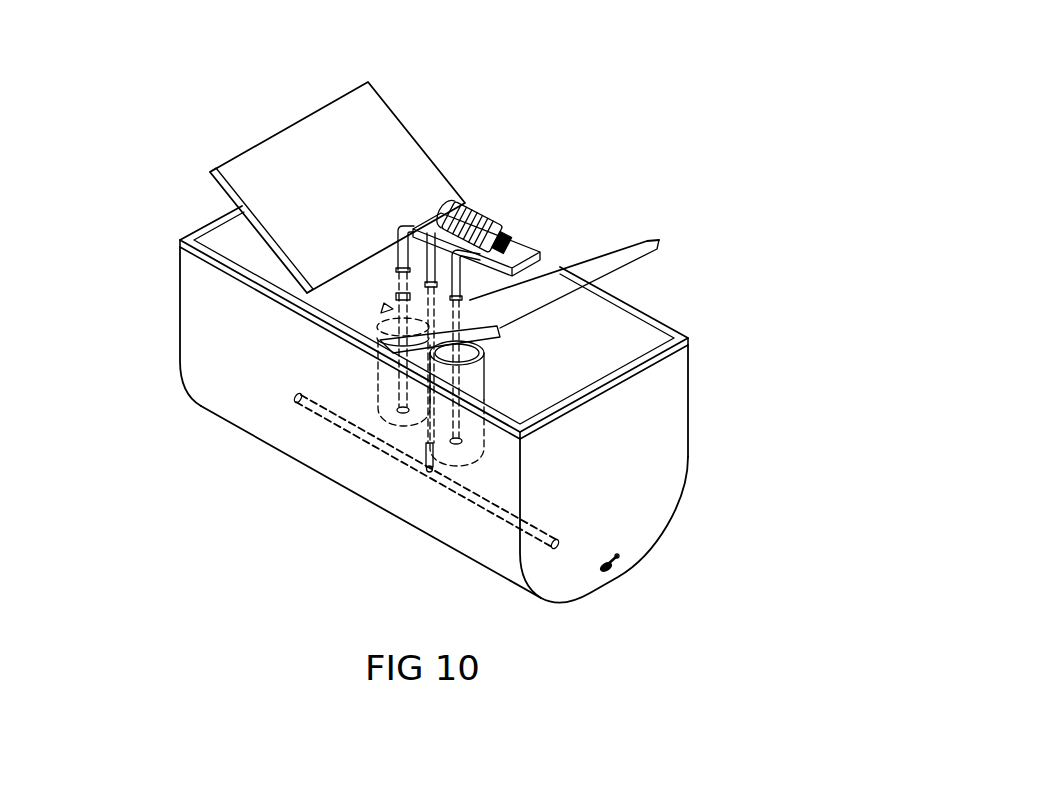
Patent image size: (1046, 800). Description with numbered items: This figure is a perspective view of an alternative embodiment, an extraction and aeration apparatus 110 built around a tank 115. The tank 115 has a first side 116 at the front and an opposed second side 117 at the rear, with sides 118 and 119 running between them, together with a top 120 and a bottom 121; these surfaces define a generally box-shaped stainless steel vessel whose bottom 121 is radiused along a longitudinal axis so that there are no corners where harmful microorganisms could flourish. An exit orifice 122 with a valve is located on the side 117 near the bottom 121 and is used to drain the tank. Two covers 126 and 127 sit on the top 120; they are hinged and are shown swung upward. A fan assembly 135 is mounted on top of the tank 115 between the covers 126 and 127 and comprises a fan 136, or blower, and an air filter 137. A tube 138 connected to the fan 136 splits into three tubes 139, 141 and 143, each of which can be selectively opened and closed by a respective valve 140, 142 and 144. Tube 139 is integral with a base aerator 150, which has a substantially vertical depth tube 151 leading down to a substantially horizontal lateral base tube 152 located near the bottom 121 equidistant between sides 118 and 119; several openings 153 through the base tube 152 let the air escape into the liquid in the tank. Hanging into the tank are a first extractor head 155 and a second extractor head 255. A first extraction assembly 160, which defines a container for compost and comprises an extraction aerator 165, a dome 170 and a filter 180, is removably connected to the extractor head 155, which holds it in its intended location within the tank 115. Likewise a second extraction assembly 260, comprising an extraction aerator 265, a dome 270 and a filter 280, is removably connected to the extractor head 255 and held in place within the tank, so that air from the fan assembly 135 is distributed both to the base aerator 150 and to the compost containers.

The extraction and aeration apparatus 110 is at (679, 77).
The tank 115 is at (688, 338).
The first side 116 is at (177, 268).
The second side 117 is at (673, 418).
The side 118 is at (222, 427).
The side 119 is at (689, 370).
The top 120 is at (648, 312).
The bottom 121 is at (650, 553).
The exit orifice 122 is at (602, 576).
The cover 126 is at (293, 124).
The cover 127 is at (647, 248).
The fan assembly 135 is at (540, 235).
The fan 136 is at (495, 214).
The air filter 137 is at (556, 218).
The tube 138 is at (570, 237).
The tube 139 is at (242, 215).
The valve 140 is at (398, 258).
The tube 141 is at (410, 226).
The valve 142 is at (424, 233).
The tube 143 is at (470, 228).
The valve 144 is at (466, 245).
The base aerator 150 is at (323, 420).
The depth tube 151 is at (440, 427).
The lateral base tube 152 is at (330, 418).
The openings 153 is at (342, 423).
The first extractor head 155 is at (398, 230).
The first extraction assembly 160 is at (377, 372).
The extraction aerator 165 is at (397, 395).
The dome 170 is at (383, 312).
The filter 180 is at (378, 340).
The second extractor head 255 is at (590, 250).
The second extraction assembly 260 is at (485, 353).
The extraction aerator 265 is at (462, 422).
The dome 270 is at (505, 330).
The filter 280 is at (482, 387).